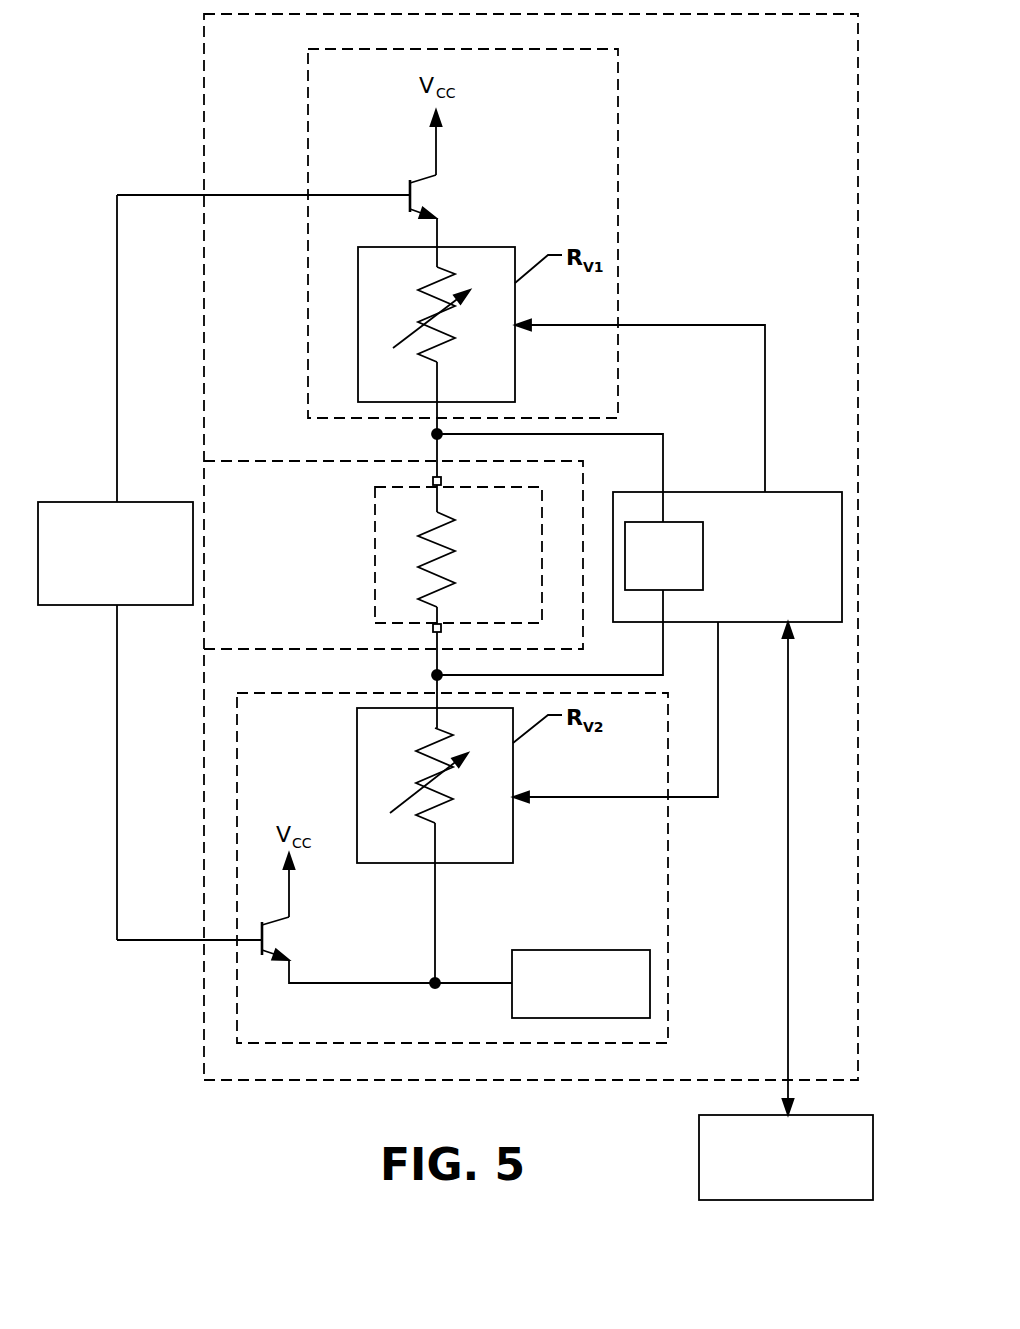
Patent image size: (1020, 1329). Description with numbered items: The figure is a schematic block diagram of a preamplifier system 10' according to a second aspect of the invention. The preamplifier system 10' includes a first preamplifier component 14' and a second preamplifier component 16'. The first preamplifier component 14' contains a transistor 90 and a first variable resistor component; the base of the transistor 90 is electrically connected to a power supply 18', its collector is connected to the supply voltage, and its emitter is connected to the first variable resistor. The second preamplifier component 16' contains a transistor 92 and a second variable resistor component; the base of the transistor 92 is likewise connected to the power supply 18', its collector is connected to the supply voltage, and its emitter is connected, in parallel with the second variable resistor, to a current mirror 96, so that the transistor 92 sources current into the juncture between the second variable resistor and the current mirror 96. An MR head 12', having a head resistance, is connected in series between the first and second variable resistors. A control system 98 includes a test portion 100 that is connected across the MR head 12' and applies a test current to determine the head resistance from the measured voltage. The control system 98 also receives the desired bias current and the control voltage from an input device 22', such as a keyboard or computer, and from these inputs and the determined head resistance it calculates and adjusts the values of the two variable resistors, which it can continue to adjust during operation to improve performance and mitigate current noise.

The preamplifier system 10' is at (485, 547).
The first preamplifier component 14' is at (469, 233).
The MR head 12' is at (420, 555).
The second preamplifier component 16' is at (496, 868).
The power supply 18' is at (162, 553).
The input device 22' is at (747, 1157).
The transistor 90 is at (441, 187).
The transistor 92 is at (288, 928).
The current mirror 96 is at (563, 950).
The control system 98 is at (752, 492).
The test portion 100 is at (703, 580).